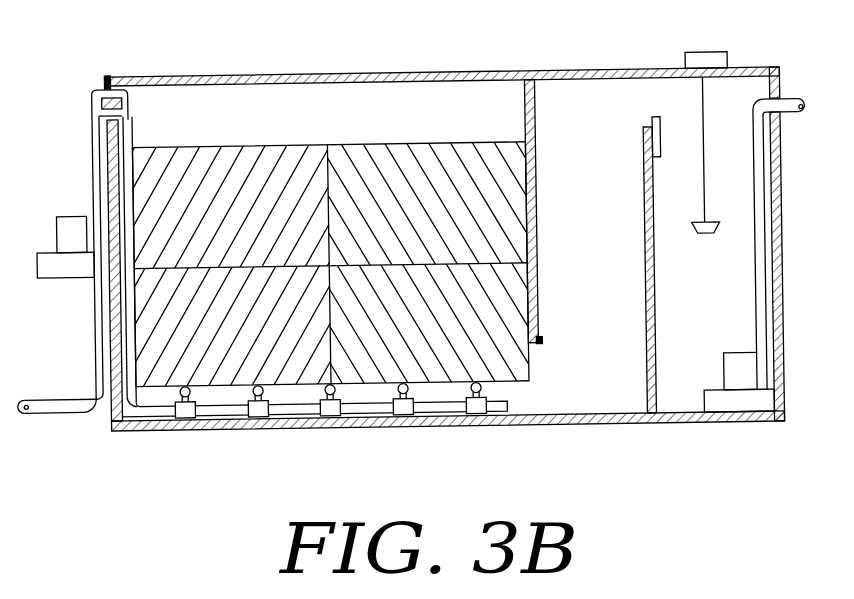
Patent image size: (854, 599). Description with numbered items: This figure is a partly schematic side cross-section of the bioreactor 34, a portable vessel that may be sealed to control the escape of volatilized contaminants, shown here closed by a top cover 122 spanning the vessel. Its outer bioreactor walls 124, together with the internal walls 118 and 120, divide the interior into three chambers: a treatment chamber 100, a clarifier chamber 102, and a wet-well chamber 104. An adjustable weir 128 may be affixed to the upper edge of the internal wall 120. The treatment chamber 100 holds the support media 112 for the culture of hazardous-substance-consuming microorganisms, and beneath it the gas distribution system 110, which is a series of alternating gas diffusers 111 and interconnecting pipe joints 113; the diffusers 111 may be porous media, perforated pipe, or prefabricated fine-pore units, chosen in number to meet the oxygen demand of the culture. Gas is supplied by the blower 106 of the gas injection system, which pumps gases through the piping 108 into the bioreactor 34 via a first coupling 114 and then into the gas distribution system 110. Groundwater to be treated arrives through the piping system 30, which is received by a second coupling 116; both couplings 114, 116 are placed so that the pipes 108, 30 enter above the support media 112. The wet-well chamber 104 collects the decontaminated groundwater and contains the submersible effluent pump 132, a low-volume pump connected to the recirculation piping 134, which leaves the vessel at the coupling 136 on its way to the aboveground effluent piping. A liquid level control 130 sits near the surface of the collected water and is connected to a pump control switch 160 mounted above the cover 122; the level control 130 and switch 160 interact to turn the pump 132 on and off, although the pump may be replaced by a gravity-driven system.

The piping system 30 is at (100, 342).
The bioreactor 34 is at (538, 49).
The treatment chamber 100 is at (266, 108).
The clarifier chamber 102 is at (627, 97).
The wet-well chamber 104 is at (745, 94).
The blower 106 is at (64, 264).
The piping 108 is at (94, 93).
The gas distribution system 110 is at (157, 436).
The gas diffusers 111 is at (183, 426).
The support media 112 is at (452, 358).
The interconnecting pipe joints 113 is at (322, 426).
The first coupling 114 is at (113, 71).
The second coupling 116 is at (134, 85).
The internal wall 118 is at (527, 92).
The internal wall 120 is at (645, 391).
The lid 122 is at (202, 72).
The bioreactor walls 124 is at (784, 255).
The adjustable weir 128 is at (652, 122).
The liquid level control 130 is at (722, 231).
The submersible effluent pump 132 is at (756, 408).
The recirculation piping 134 is at (767, 371).
The coupling 136 is at (785, 108).
The pump control switch 160 is at (716, 58).